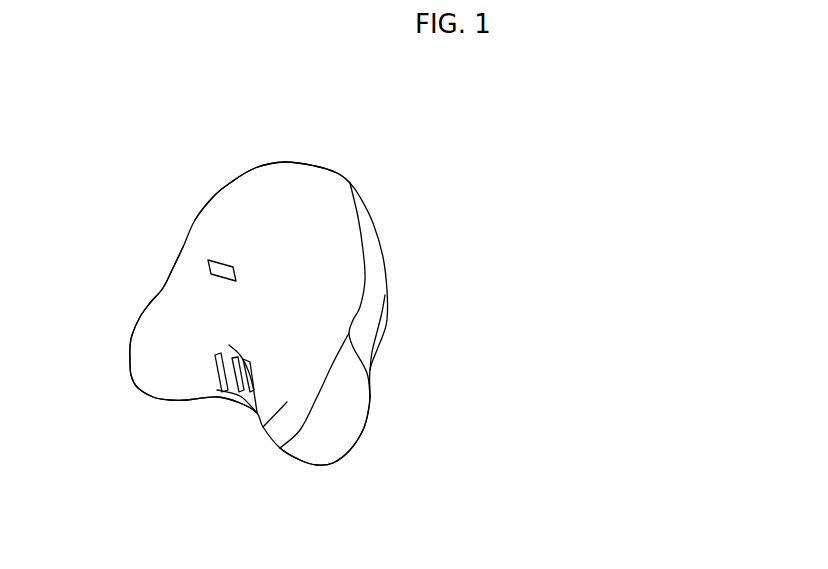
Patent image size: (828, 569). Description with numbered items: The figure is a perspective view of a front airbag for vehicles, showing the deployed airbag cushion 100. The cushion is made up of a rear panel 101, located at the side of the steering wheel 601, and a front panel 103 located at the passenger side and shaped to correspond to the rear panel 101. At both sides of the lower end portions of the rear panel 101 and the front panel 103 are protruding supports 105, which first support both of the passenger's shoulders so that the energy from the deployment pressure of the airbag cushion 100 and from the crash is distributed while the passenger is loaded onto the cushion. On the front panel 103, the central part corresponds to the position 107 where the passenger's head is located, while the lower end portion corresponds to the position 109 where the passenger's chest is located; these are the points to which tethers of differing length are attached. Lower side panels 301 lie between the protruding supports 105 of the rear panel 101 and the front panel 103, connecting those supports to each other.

The airbag cushion 100 is at (356, 162).
The rear panel 101 is at (372, 224).
The front panel 103 is at (213, 197).
The protruding supports 105 is at (143, 352).
The position at which the passenger's head is located 107 is at (207, 268).
The position at which the passenger's chest is located 109 is at (220, 380).
The lower side panels 301 is at (347, 437).
The steering wheel 601 is at (387, 333).